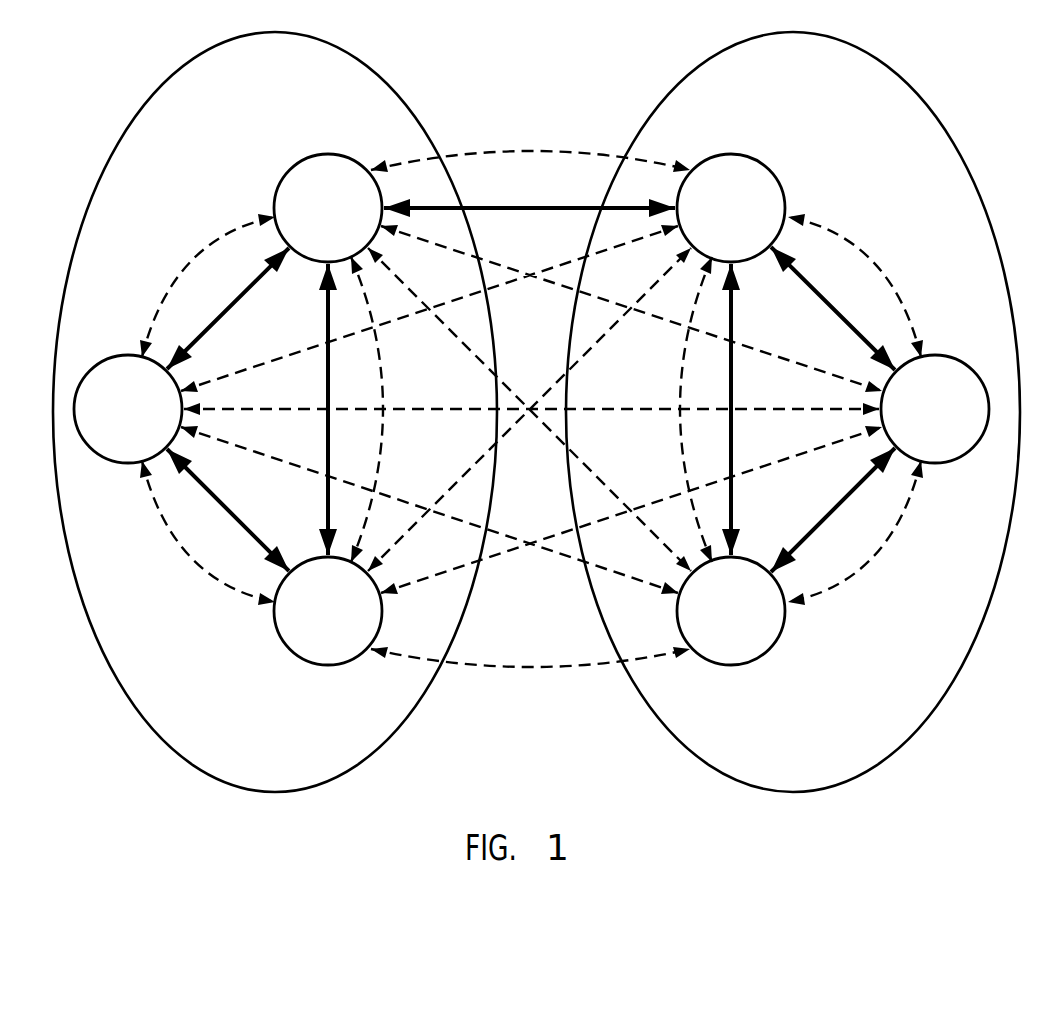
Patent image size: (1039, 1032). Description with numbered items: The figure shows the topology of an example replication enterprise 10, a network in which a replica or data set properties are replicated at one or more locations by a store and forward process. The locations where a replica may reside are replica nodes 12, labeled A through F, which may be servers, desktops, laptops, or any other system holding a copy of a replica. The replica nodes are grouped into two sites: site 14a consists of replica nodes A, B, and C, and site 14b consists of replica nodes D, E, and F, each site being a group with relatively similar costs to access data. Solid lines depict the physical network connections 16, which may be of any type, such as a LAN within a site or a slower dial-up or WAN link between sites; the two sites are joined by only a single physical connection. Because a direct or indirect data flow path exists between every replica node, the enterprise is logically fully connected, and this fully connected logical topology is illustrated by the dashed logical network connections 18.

The replication enterprise 10 is at (600, 126).
The replica node 12 is at (531, 419).
The site 14a is at (152, 728).
The site 14b is at (968, 653).
The physical network connection 16 is at (531, 370).
The logical network connection 18 is at (536, 400).